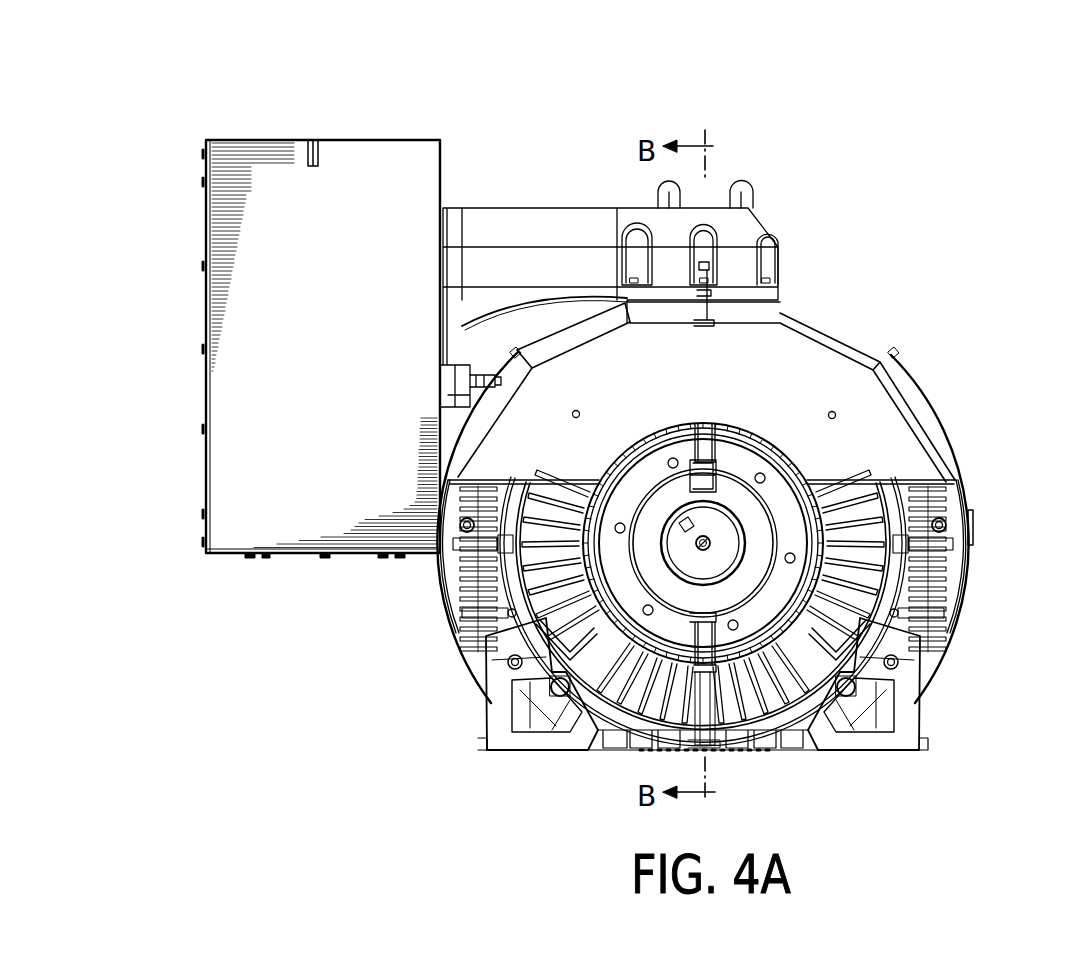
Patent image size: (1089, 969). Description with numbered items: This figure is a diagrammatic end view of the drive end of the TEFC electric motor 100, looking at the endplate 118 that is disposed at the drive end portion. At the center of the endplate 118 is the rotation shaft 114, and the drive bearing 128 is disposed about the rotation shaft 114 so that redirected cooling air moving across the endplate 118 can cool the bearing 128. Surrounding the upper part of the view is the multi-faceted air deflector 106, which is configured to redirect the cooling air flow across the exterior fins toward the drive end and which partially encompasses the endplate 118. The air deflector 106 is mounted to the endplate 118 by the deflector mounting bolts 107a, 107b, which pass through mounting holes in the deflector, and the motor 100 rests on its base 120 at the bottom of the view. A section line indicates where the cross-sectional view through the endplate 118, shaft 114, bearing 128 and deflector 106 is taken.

The electric motor 100 is at (915, 156).
The multi-faceted air deflector 106 is at (802, 357).
The deflector mounting bolt 107a is at (571, 414).
The mounting bolt 107b is at (838, 413).
The rotation shaft 114 is at (685, 547).
The endplate 118 is at (800, 682).
The base 120 is at (538, 752).
The drive bearing 128 is at (946, 524).